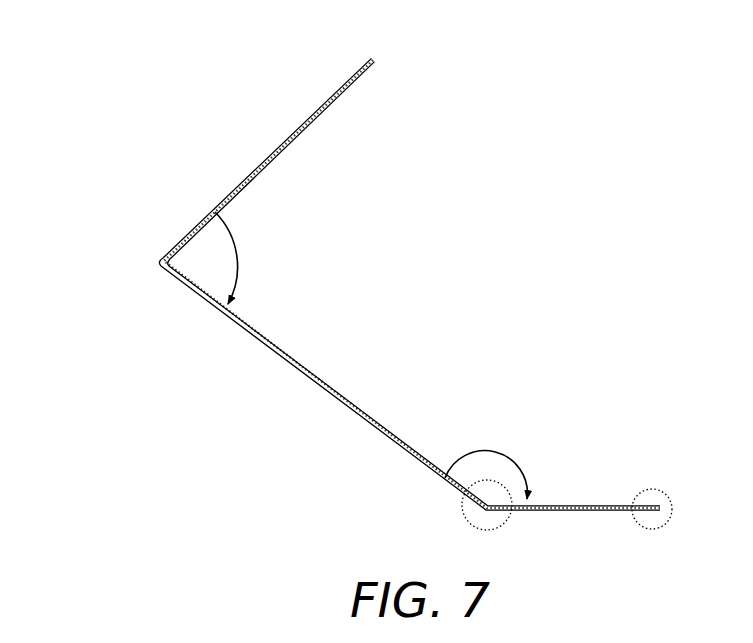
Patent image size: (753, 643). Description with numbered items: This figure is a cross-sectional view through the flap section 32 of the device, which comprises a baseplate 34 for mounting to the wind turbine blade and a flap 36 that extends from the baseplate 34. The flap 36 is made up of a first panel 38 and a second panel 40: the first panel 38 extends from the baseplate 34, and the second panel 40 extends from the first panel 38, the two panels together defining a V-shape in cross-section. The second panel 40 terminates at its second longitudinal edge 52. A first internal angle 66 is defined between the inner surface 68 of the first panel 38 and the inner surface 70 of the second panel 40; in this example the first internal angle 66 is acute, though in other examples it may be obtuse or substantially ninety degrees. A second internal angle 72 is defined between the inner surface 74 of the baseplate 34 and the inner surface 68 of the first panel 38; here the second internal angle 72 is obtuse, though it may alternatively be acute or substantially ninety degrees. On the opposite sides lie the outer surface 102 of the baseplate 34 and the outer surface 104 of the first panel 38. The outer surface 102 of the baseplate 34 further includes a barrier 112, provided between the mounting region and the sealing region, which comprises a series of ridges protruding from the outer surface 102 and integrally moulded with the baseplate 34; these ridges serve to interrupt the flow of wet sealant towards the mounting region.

The flap section 32 is at (134, 78).
The baseplate 34 is at (536, 513).
The flap 36 is at (478, 203).
The first panel 38 is at (262, 350).
The second panel 40 is at (277, 152).
The second longitudinal edge 52 is at (376, 63).
The first internal angle 66 is at (241, 255).
The inner surface of the first panel 68 is at (332, 390).
The inner surface of the second panel 70 is at (350, 99).
The second internal angle 72 is at (490, 451).
The inner surface of the baseplate 74 is at (573, 505).
The outer surface of the baseplate 102 is at (585, 514).
The outer surface of the first flap panel 104 is at (374, 432).
The barrier 112 is at (495, 513).